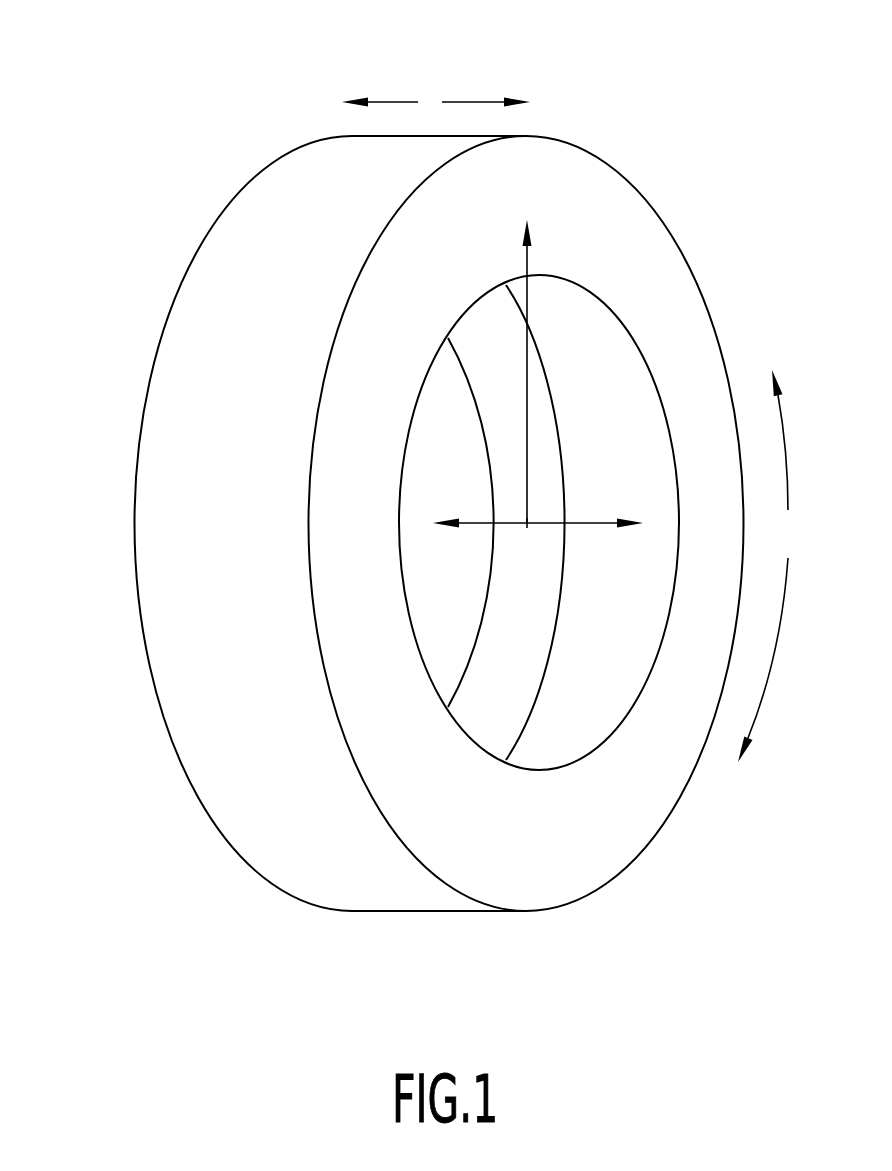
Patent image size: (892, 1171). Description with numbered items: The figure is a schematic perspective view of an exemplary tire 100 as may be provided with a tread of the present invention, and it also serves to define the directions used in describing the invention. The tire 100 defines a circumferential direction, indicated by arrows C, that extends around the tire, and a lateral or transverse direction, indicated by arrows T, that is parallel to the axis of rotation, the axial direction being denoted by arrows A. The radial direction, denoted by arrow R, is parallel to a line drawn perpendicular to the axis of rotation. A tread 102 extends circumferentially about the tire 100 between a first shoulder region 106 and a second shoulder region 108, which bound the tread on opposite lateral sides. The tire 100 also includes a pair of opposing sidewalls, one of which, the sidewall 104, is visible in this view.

The tire 100 is at (431, 460).
The tread 102 is at (298, 471).
The sidewall 104 is at (540, 470).
The shoulder region 106 is at (329, 126).
The shoulder region 108 is at (546, 112).